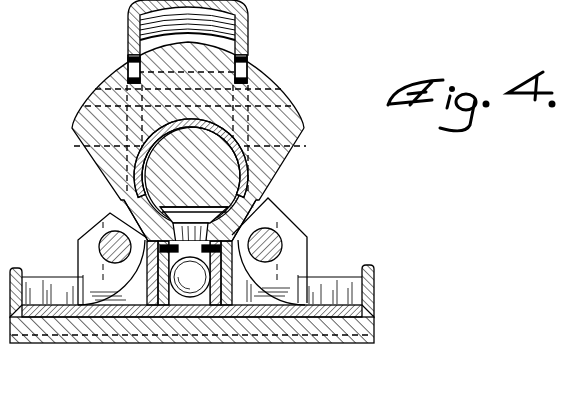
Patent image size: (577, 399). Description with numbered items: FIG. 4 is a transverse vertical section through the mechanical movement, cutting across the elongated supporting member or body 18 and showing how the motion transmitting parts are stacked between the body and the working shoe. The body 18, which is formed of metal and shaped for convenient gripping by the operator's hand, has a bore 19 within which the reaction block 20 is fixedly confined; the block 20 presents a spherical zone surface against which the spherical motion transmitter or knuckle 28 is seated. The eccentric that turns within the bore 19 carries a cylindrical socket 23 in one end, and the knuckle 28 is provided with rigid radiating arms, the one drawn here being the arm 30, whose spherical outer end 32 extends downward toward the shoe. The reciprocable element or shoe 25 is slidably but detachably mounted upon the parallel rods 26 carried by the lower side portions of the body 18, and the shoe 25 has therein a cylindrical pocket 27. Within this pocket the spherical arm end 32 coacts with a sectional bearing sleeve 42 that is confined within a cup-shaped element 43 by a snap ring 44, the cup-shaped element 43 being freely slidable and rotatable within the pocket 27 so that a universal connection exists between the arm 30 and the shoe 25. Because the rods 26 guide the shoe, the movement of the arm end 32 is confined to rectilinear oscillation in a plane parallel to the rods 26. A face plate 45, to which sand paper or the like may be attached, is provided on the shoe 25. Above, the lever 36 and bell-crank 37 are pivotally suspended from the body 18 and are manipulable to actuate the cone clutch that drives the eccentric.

The supporting member or body 18 is at (93, 113).
The bore 19 is at (262, 147).
The block 20 is at (158, 175).
The cylindrical socket 23 is at (142, 155).
The reciprocable element or shoe 25 is at (375, 293).
The parallel rods 26 is at (113, 246).
The cylindrical pocket 27 is at (162, 309).
The spherical motion transmitter or knuckle 28 is at (234, 229).
The arm 30 is at (215, 125).
The spherical outer end 32 is at (191, 285).
The lever 36 is at (128, 28).
The bell-crank 37 is at (262, 117).
The sectional bearing sleeve 42 is at (219, 257).
The cup-shaped element 43 is at (165, 303).
The snap ring 44 is at (221, 248).
The face plate 45 is at (63, 327).